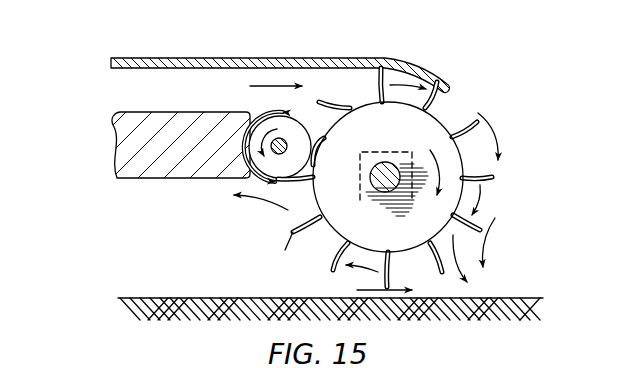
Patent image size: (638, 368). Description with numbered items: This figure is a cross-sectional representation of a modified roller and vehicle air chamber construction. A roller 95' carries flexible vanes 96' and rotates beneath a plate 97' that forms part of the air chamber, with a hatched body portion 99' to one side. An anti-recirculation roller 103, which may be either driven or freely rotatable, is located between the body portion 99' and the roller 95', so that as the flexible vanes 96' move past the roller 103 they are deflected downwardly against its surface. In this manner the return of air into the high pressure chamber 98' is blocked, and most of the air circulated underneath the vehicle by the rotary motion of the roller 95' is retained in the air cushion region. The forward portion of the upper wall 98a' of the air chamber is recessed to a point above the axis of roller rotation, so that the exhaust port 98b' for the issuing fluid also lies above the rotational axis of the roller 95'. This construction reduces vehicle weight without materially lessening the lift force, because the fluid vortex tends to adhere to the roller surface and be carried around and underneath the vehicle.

The guide plate 97' is at (291, 59).
The high pressure chamber 98' is at (338, 68).
The roller 95' is at (388, 140).
The upper wall of the air chamber 98a' is at (461, 78).
The exhaust port 98b' is at (489, 110).
The body portion 99' is at (186, 143).
The anti-recirculation roller 103 is at (248, 142).
The flexible vanes 96' is at (377, 177).